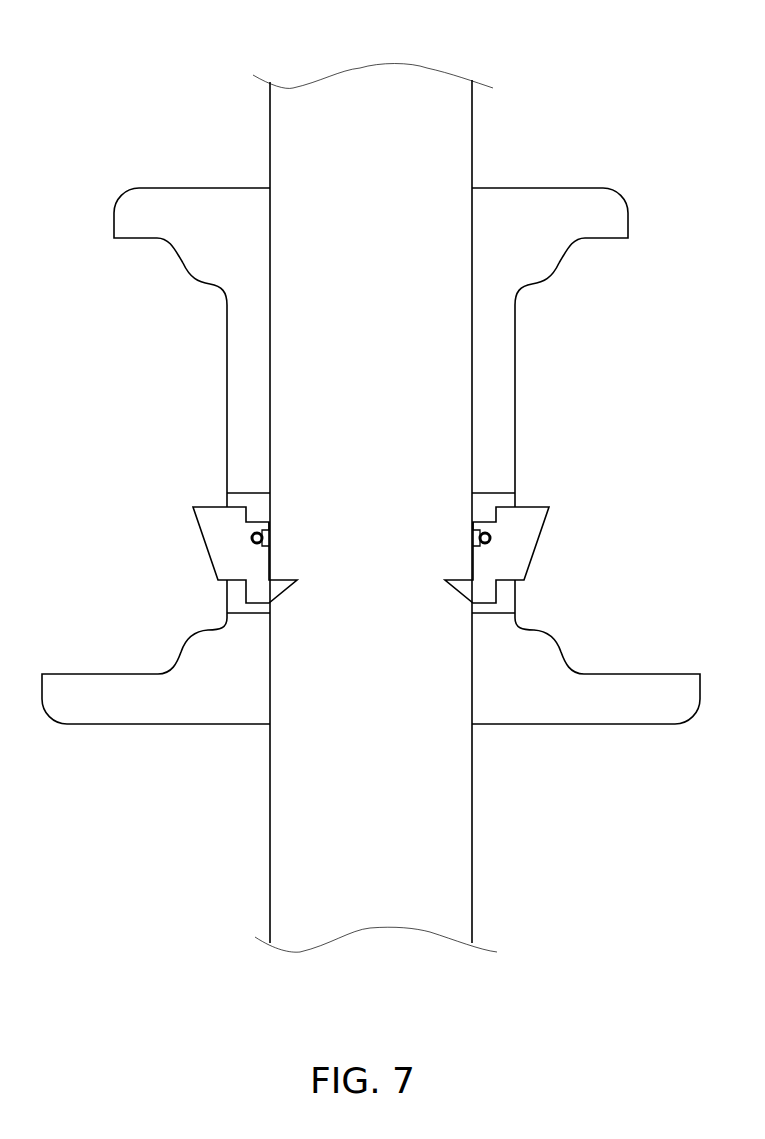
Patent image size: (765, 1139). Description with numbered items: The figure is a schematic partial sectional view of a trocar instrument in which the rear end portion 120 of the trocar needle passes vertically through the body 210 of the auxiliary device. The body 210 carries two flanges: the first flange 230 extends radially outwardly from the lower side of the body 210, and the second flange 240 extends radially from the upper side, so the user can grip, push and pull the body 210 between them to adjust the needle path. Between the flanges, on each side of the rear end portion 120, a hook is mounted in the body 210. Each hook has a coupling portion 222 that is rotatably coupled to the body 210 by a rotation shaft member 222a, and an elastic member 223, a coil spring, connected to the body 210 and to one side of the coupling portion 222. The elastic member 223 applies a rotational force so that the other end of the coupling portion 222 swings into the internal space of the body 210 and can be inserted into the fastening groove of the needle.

The rear end portion 120 is at (387, 88).
The second flange 240 is at (605, 205).
The body 210 is at (490, 338).
The first flange 230 is at (662, 708).
The coupling portion 222 is at (515, 552).
The rotation shaft member 222a is at (495, 535).
The elastic member 223 is at (253, 543).